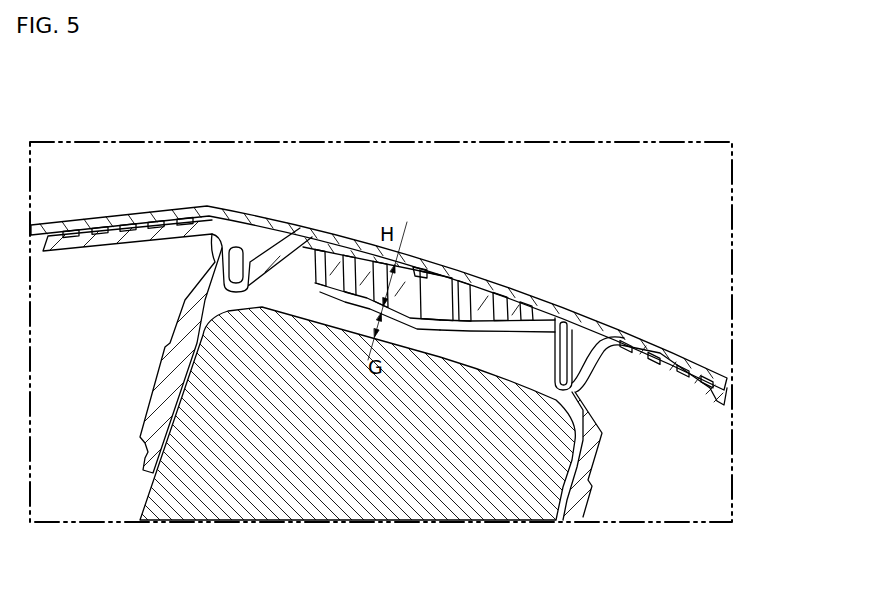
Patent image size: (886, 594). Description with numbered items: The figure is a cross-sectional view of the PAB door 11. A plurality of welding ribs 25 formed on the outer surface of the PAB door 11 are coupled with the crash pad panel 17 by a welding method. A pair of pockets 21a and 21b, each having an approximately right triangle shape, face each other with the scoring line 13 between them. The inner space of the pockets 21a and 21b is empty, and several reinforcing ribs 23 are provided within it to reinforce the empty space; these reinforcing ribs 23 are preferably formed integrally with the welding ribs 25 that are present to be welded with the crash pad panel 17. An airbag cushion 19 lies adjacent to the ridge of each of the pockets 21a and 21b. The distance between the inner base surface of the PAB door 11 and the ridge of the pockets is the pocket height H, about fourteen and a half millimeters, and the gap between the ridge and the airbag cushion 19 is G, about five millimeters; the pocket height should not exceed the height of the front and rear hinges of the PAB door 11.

The PAB door 11 is at (680, 391).
The scoring line 13 is at (425, 268).
The crash pad panel 17 is at (222, 210).
The airbag cushion 19 is at (383, 480).
The pocket 21a is at (310, 283).
The pocket 21b is at (555, 312).
The reinforcing ribs 23 is at (505, 287).
The welding ribs 25 is at (120, 228).